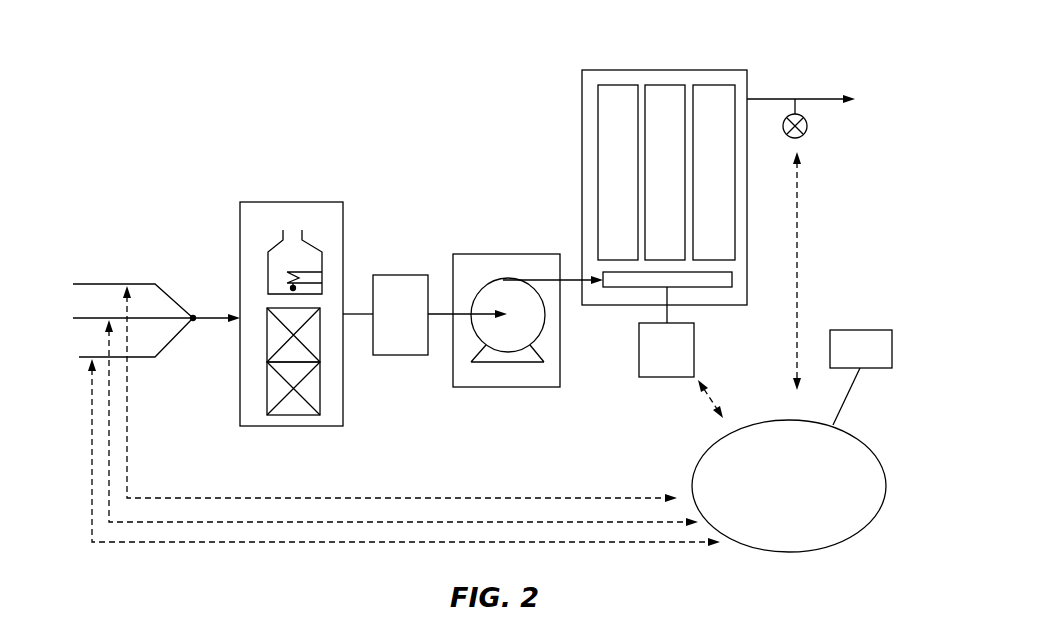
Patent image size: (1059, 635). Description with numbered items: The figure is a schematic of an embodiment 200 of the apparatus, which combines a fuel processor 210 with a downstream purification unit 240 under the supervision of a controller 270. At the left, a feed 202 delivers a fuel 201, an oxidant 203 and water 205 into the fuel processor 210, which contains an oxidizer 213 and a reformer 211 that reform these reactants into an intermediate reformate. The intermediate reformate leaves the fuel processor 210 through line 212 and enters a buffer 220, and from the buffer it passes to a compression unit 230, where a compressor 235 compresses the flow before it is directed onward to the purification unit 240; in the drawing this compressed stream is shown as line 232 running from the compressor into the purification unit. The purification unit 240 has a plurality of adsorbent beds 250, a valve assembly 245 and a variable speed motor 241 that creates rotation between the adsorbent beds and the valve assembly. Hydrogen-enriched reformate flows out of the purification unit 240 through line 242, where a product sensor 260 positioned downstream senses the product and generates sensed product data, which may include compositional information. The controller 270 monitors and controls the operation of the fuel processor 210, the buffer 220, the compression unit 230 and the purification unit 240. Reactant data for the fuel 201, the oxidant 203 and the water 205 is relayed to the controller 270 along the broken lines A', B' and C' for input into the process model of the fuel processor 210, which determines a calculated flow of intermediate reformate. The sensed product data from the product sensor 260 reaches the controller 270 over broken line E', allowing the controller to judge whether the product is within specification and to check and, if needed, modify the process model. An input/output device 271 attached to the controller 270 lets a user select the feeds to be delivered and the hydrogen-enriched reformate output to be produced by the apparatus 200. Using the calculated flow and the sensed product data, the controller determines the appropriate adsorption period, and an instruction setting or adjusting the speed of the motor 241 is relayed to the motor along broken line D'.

The embodiment 200 is at (428, 122).
The fuel 201 is at (60, 294).
The oxidant 203 is at (60, 332).
The water 205 is at (60, 368).
The feed 202 is at (207, 320).
The fuel processor 210 is at (335, 426).
The reformer 211 is at (293, 407).
The line 212 is at (353, 313).
The oxidizer 213 is at (280, 258).
The buffer 220 is at (382, 323).
The compression unit 230 is at (553, 378).
The pump outlet conduit 232 is at (570, 278).
The compressor 235 is at (492, 355).
The purification unit 240 is at (582, 90).
The variable speed motor 241 is at (648, 367).
The line 242 is at (770, 98).
The valve assembly 245 is at (695, 280).
The adsorbent beds 250 is at (668, 95).
The product sensor 260 is at (808, 126).
The controller 270 is at (771, 503).
The input/output device 271 is at (867, 330).
The broken line A' is at (375, 452).
The broken line B' is at (370, 423).
The broken line C' is at (400, 394).
The broken line D' is at (720, 383).
The broken line E' is at (827, 271).